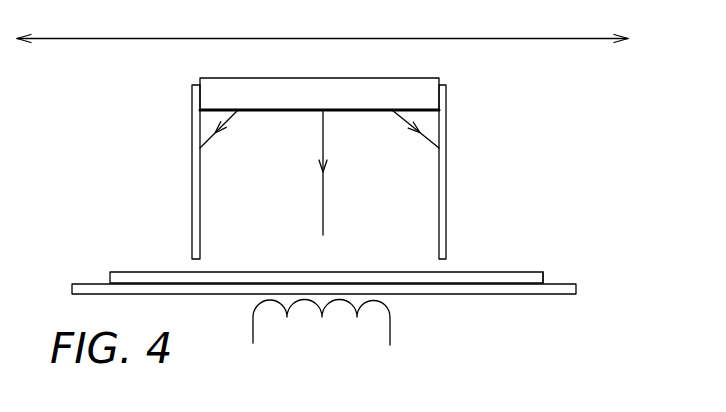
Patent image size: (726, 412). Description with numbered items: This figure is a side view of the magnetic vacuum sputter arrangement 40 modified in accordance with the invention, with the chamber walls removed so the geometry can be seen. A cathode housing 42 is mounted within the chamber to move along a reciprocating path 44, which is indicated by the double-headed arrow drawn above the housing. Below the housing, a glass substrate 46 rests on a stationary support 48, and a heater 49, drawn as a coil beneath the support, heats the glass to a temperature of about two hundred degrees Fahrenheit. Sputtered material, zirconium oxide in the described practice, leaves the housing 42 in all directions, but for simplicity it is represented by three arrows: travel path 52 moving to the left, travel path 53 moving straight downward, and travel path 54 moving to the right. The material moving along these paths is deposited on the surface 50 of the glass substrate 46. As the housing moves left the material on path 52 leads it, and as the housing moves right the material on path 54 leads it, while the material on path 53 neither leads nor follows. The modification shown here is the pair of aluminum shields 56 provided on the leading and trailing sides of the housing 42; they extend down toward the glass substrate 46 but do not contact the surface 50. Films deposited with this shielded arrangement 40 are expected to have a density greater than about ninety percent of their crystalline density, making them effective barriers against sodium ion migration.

The magnetic vacuum sputter arrangement 40 is at (521, 148).
The cathode housing 42 is at (443, 97).
The reciprocating path 44 is at (515, 39).
The glass substrate 46 is at (543, 276).
The stationary support 48 is at (520, 298).
The heater 49 is at (390, 327).
The surface 50 is at (473, 271).
The travel path 52 is at (238, 111).
The travel path 53 is at (323, 187).
The travel path 54 is at (407, 125).
The aluminum shields 56 is at (192, 175).